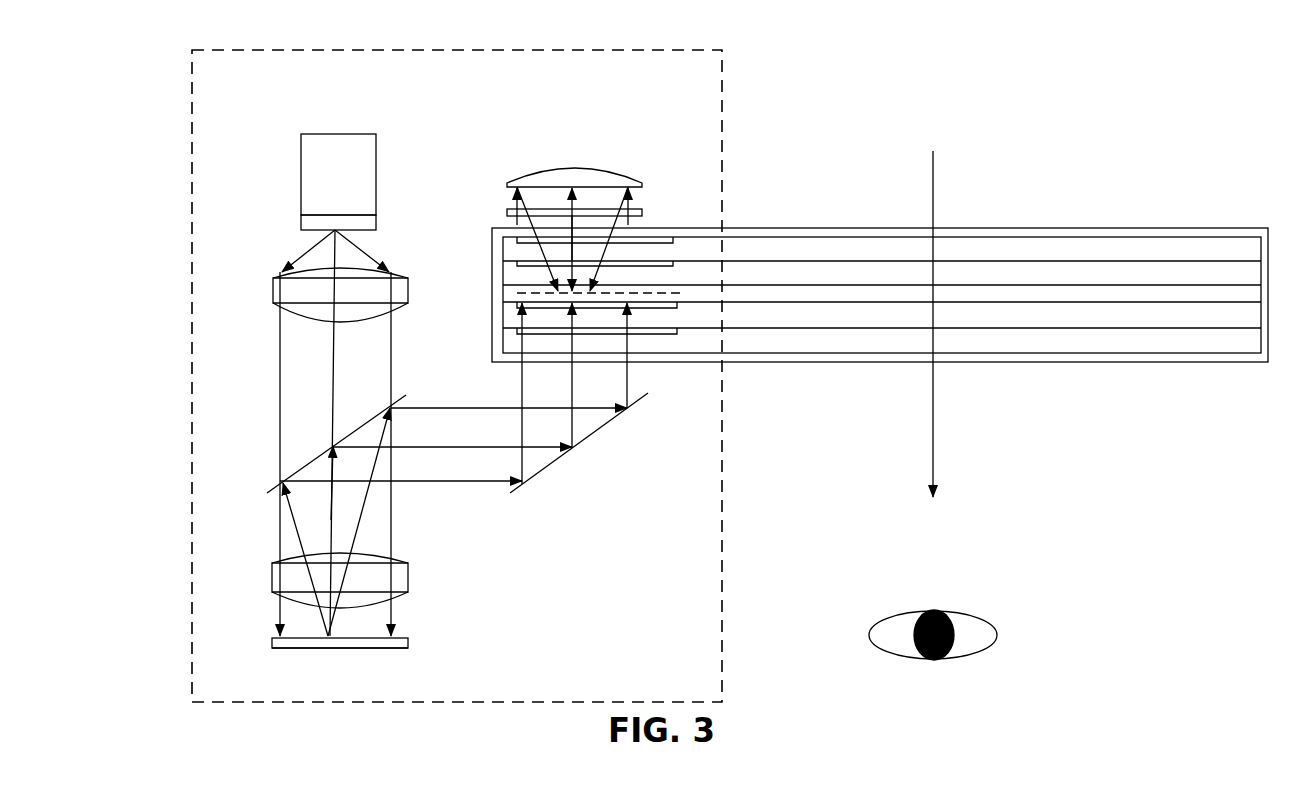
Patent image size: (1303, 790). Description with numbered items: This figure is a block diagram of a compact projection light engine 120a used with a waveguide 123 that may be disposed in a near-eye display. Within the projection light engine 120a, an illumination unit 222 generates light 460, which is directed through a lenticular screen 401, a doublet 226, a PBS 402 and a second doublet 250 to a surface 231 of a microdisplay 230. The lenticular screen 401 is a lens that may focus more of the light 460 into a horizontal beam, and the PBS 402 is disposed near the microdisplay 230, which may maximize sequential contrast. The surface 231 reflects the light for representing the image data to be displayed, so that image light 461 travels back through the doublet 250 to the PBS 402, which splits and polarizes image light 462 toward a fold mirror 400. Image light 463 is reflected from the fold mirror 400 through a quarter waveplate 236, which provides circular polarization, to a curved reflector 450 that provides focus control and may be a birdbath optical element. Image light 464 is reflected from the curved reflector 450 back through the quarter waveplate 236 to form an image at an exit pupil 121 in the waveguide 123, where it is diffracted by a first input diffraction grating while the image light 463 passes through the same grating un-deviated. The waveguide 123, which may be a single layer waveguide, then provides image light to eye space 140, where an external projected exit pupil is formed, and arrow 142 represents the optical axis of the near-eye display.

The projection light engine 120a is at (566, 46).
The illumination unit 222 is at (343, 142).
The lenticular screen 401 is at (301, 220).
The doublet 226 is at (362, 268).
The light 460 is at (332, 367).
The PBS 402 is at (310, 462).
The image light 461 is at (368, 495).
The doublet 250 is at (410, 573).
The microdisplay 230 is at (410, 642).
The surface 231 is at (307, 651).
The image light 462 is at (468, 403).
The image light 463 is at (645, 391).
The fold mirror 400 is at (582, 453).
The waveguide 123 is at (1185, 227).
The image light 464 is at (610, 243).
The exit pupil 121 is at (530, 293).
The quarter waveplate 236 is at (507, 212).
The curved reflector 450 is at (610, 170).
The arrow 142 is at (935, 188).
The eye space 140 is at (977, 618).